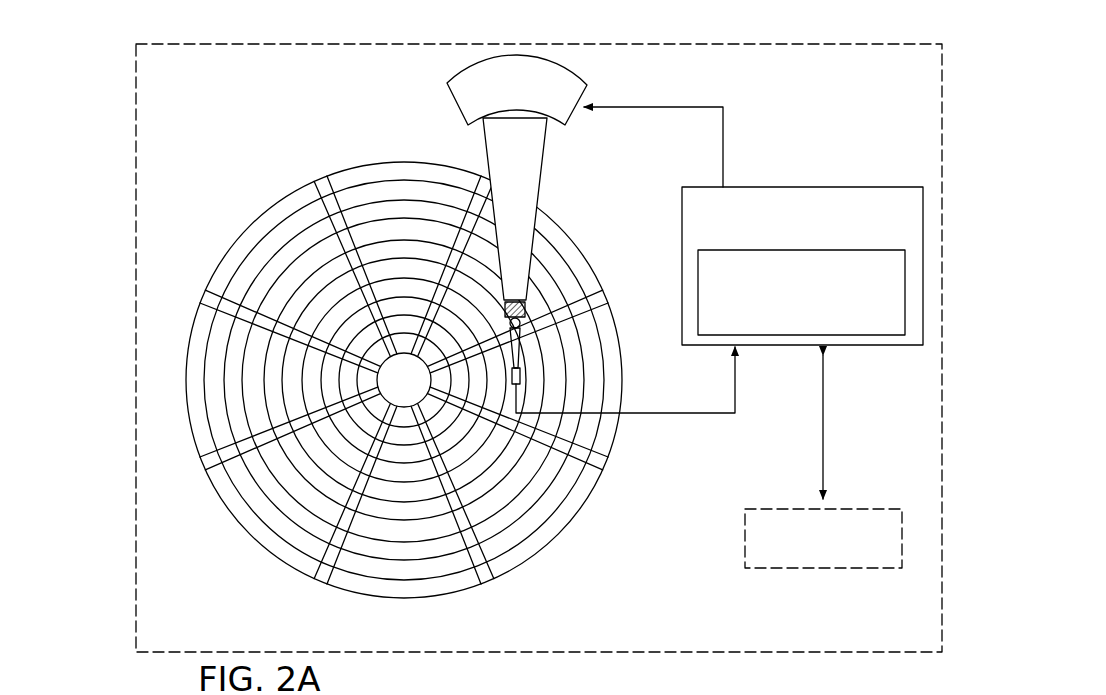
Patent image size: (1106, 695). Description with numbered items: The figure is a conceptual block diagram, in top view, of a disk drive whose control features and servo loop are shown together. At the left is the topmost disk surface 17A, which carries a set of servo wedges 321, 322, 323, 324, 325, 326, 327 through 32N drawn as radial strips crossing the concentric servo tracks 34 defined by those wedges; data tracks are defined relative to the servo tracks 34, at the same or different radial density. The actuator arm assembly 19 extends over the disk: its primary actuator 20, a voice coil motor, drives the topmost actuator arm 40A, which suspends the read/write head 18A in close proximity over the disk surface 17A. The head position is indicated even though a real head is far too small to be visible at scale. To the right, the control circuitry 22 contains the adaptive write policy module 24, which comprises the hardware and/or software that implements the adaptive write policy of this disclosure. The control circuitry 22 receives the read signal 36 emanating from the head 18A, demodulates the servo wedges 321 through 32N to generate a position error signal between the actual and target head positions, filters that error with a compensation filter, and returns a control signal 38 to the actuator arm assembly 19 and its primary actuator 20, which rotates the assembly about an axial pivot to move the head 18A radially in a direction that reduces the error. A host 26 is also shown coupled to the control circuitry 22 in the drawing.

The disk surface 17A is at (253, 214).
The read/write head 18A is at (529, 388).
The actuator arm assembly 19 is at (1105, 60).
The primary actuator 20 is at (582, 115).
The control circuitry 22 is at (802, 266).
The adaptive write policy module 24 is at (801, 292).
The host 26 is at (823, 461).
The servo wedge 32N is at (480, 185).
The servo wedge 321 is at (316, 185).
The servo wedge 322 is at (207, 301).
The servo wedge 323 is at (207, 468).
The servo wedge 324 is at (326, 580).
The servo wedge 325 is at (492, 580).
The servo wedge 326 is at (608, 458).
The servo wedge 327 is at (600, 296).
The servo tracks 34 is at (410, 186).
The read signal 36 is at (713, 414).
The control signal 38 is at (724, 131).
The actuator arm 40A is at (534, 180).